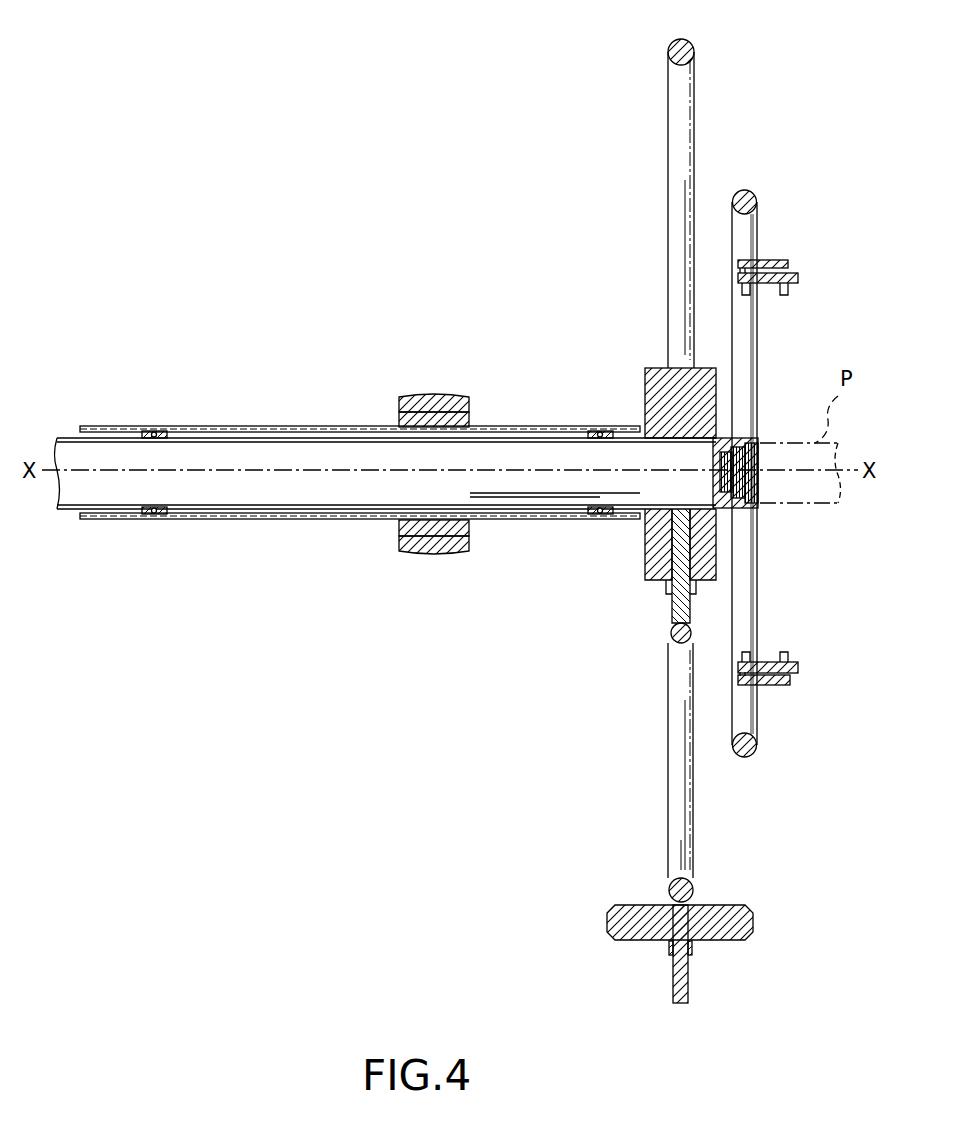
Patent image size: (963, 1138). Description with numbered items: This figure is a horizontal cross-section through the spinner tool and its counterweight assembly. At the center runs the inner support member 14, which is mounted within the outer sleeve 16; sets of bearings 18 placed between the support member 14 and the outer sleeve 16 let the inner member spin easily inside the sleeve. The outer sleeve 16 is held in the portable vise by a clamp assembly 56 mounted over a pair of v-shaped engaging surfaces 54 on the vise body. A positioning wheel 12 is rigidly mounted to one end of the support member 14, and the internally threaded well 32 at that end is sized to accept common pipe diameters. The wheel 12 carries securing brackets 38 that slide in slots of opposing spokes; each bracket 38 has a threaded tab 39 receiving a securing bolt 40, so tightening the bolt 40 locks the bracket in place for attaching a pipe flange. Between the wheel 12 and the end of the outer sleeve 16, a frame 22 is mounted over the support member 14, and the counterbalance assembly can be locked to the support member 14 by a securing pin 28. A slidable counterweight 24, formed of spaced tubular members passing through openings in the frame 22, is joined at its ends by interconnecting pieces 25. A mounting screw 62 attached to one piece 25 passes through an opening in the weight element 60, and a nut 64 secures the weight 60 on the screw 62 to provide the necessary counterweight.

The positioning wheel 12 is at (752, 306).
The inner support member 14 is at (132, 440).
The outer sleeve 16 is at (115, 426).
The bearings 18 is at (172, 438).
The frame 22 is at (655, 378).
The slidable counterweight 24 is at (668, 80).
The interconnecting pieces 25 is at (690, 44).
The securing pin 28 is at (677, 637).
The well 32 is at (753, 453).
The securing brackets 38 is at (768, 262).
The threaded tab 39 is at (742, 290).
The securing bolts 40 is at (798, 278).
The engaging surfaces 54 is at (462, 418).
The clamp assembly 56 is at (440, 404).
The weight element 60 is at (755, 925).
The mounting screw 62 is at (690, 1001).
The nut 64 is at (694, 951).